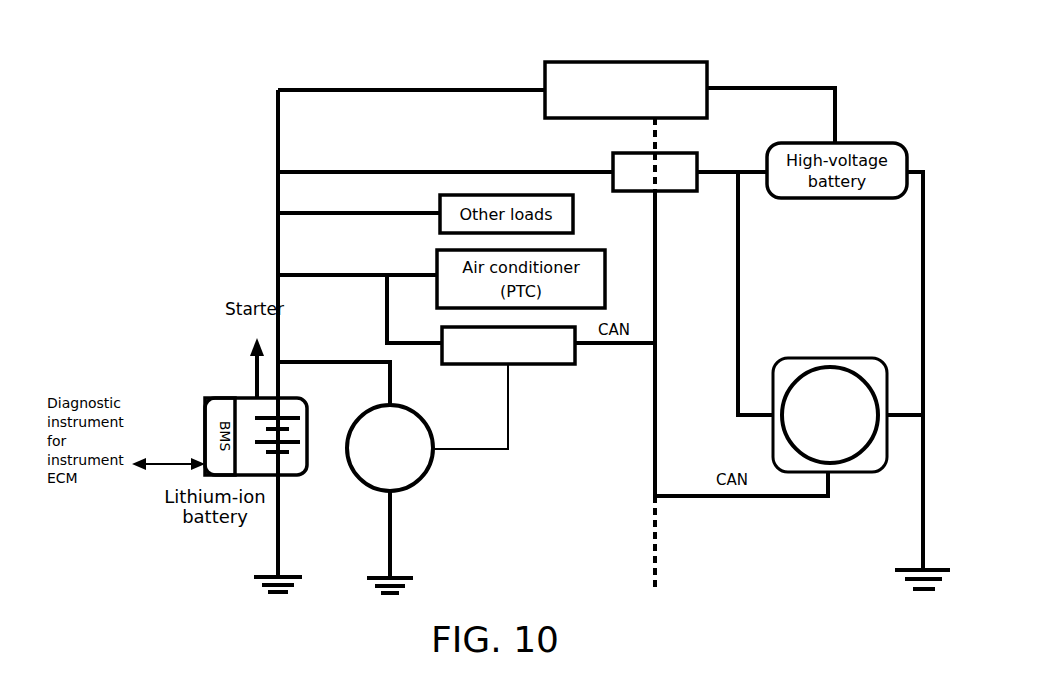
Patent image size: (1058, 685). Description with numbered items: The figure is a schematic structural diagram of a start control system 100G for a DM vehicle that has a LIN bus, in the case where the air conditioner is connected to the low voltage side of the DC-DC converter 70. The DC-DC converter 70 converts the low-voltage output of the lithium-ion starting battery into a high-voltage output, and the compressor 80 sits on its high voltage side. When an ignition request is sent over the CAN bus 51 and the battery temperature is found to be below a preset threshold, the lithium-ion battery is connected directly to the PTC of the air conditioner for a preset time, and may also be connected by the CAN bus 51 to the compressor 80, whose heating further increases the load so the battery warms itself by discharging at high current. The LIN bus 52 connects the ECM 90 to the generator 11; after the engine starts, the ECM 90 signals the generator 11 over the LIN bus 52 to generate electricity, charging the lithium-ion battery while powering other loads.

The start control system 100G is at (531, 67).
The DC-DC converter 70 is at (672, 191).
The compressor 80 is at (802, 358).
The ECM 90 is at (558, 364).
The LIN bus 52 is at (458, 452).
The generator 11 is at (428, 475).
The CAN bus 51 is at (160, 470).